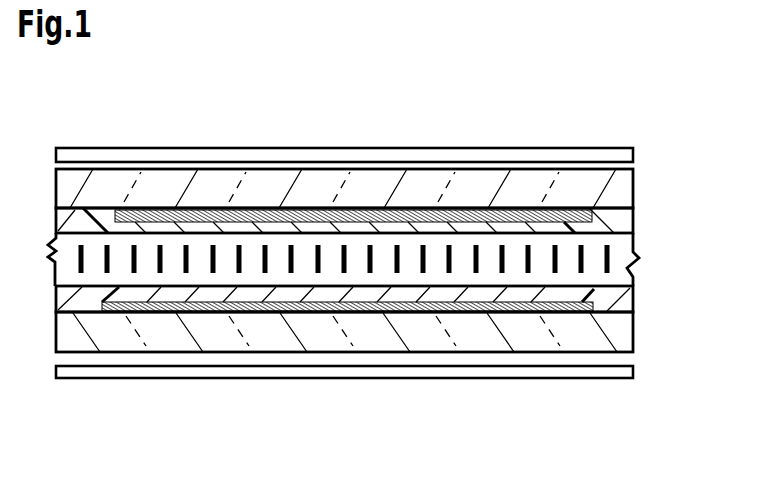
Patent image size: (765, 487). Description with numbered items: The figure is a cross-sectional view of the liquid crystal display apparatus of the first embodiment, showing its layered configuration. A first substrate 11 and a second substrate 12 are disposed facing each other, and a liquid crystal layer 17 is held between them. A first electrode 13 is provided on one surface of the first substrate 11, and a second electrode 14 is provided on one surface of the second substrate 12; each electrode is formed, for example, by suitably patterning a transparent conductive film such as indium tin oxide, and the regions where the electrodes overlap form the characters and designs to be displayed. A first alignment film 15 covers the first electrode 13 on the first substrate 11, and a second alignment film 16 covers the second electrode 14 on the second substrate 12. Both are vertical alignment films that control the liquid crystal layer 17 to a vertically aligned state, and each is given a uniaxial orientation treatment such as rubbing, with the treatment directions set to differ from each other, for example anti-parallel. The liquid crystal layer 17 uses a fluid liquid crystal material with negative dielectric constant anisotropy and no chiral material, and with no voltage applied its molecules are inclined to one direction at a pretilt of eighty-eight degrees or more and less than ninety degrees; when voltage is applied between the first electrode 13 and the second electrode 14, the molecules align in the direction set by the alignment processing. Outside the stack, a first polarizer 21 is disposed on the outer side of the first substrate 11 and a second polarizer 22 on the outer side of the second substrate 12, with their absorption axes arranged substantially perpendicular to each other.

The first substrate 11 is at (633, 193).
The second substrate 12 is at (633, 328).
The first electrode 13 is at (378, 210).
The second electrode 14 is at (317, 311).
The first alignment film 15 is at (633, 225).
The second alignment film 16 is at (633, 293).
The liquid crystal layer 17 is at (633, 257).
The first polarizer 21 is at (633, 154).
The second polarizer 22 is at (633, 372).